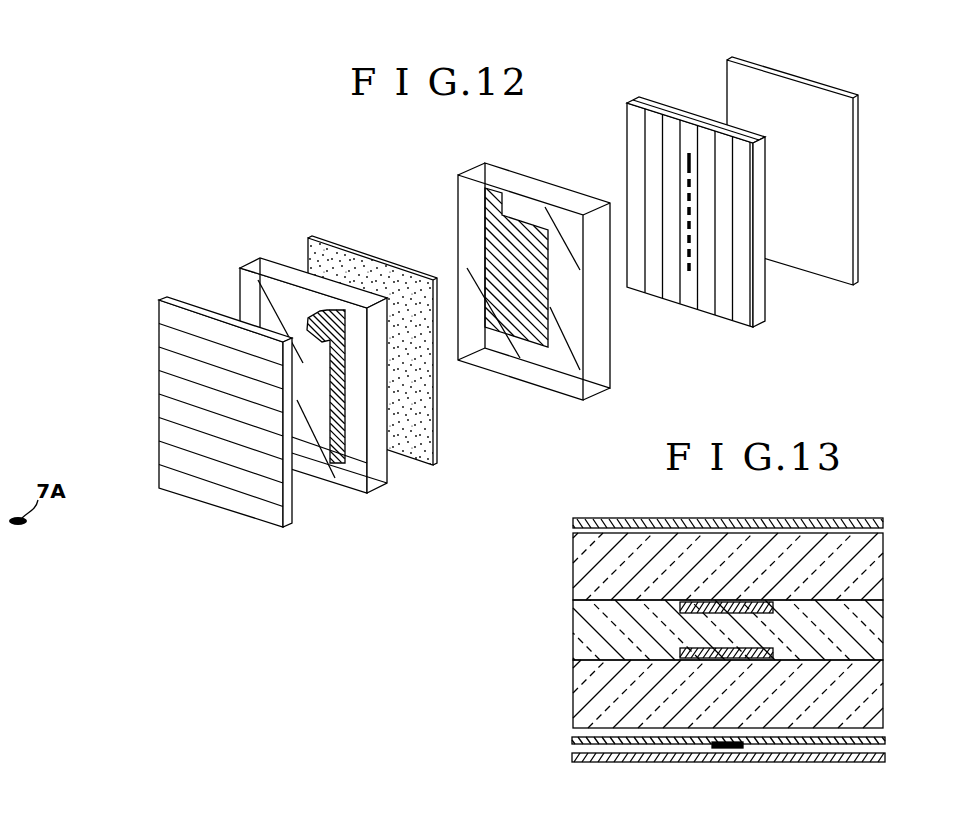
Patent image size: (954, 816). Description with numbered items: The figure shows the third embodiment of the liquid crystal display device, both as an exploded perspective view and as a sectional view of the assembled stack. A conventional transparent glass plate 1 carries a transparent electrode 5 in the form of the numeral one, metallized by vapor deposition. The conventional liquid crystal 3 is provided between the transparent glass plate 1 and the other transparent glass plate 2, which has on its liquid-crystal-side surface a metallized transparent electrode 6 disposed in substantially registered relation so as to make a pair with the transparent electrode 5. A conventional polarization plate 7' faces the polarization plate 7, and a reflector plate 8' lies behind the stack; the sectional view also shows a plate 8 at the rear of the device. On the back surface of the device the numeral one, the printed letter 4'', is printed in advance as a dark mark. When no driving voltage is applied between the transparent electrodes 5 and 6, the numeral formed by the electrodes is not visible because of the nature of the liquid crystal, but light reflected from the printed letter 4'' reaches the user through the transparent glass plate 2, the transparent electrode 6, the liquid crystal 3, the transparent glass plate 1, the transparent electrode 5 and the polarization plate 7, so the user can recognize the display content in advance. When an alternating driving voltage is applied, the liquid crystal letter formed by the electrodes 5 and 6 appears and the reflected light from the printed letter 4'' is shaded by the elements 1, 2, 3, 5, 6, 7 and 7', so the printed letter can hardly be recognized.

In FIG. 12, the transparent glass plate 1 is at (377, 475).
In FIG. 13, the transparent glass plate 1 is at (873, 563).
In FIG. 12, the transparent glass plate 2 is at (595, 377).
In FIG. 13, the transparent glass plate 2 is at (867, 697).
In FIG. 12, the liquid crystal 3 is at (418, 452).
In FIG. 13, the liquid crystal 3 is at (587, 633).
In FIG. 12, the transparent electrode 5 is at (325, 463).
In FIG. 13, the transparent electrode 5 is at (775, 602).
In FIG. 12, the transparent electrode 6 is at (528, 335).
In FIG. 13, the transparent electrode 6 is at (772, 648).
In FIG. 12, the polarization plate 7 is at (225, 428).
In FIG. 13, the polarization plate 7 is at (742, 504).
In FIG. 12, the polarization plate 7' is at (696, 225).
In FIG. 13, the polarization plate 7' is at (728, 771).
In FIG. 13, the reflector plate 8 is at (728, 780).
In FIG. 12, the reflector plate 8' is at (792, 184).
In FIG. 12, the printed letter 4'' is at (689, 171).
In FIG. 13, the printed letter 4'' is at (721, 775).